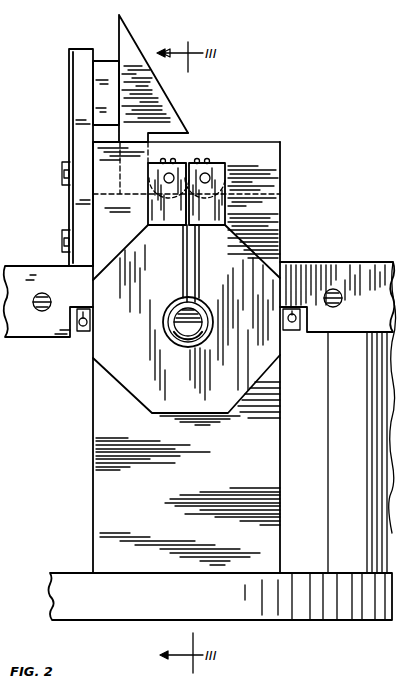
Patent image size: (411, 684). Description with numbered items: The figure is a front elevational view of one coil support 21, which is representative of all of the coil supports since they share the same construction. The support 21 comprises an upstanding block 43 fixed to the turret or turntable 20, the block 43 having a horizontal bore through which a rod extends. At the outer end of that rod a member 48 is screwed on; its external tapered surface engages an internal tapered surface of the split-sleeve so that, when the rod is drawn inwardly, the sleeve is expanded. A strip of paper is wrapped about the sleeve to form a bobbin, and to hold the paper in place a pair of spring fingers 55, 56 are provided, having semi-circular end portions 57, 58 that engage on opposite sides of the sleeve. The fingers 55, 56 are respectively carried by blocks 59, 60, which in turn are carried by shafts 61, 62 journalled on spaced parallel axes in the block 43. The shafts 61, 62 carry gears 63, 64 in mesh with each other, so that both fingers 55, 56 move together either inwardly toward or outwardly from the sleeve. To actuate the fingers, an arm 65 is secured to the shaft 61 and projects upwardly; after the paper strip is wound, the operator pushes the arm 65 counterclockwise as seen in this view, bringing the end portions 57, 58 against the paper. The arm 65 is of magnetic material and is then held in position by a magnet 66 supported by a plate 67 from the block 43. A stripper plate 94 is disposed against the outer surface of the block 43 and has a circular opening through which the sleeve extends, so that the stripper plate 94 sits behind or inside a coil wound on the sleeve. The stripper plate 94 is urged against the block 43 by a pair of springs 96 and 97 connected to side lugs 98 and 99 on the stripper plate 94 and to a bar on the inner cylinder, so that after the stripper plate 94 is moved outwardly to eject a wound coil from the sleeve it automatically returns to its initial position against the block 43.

The turret 20 is at (302, 622).
The coil support 21 is at (281, 139).
The upstanding block 43 is at (262, 473).
The member 48 is at (180, 336).
The spring finger 55 is at (182, 258).
The spring finger 56 is at (199, 275).
The semi-circular end portion 57 is at (160, 318).
The semi-circular end portion 58 is at (212, 302).
The block 59 is at (148, 215).
The block 60 is at (226, 212).
The shaft 61 is at (185, 166).
The shaft 62 is at (210, 175).
The gear 63 is at (173, 152).
The gear 64 is at (205, 160).
The arm 65 is at (160, 101).
The magnet 66 is at (107, 60).
The plate 67 is at (75, 98).
The stripper plate 94 is at (186, 319).
The spring 96 is at (75, 320).
The spring 97 is at (303, 303).
The side lug 98 is at (82, 338).
The side lug 99 is at (293, 334).